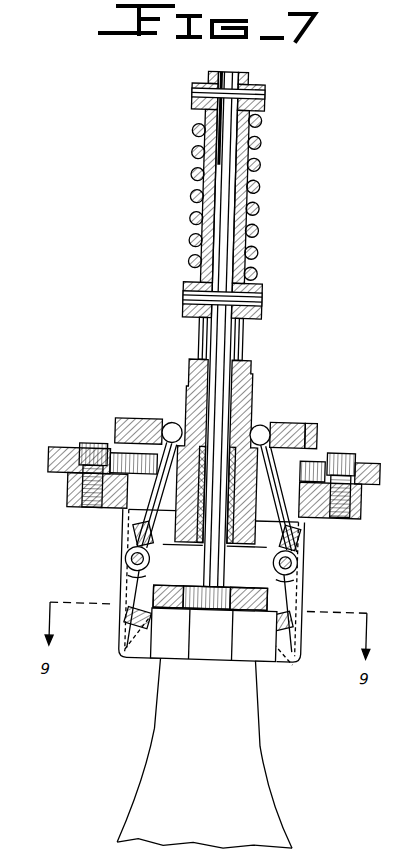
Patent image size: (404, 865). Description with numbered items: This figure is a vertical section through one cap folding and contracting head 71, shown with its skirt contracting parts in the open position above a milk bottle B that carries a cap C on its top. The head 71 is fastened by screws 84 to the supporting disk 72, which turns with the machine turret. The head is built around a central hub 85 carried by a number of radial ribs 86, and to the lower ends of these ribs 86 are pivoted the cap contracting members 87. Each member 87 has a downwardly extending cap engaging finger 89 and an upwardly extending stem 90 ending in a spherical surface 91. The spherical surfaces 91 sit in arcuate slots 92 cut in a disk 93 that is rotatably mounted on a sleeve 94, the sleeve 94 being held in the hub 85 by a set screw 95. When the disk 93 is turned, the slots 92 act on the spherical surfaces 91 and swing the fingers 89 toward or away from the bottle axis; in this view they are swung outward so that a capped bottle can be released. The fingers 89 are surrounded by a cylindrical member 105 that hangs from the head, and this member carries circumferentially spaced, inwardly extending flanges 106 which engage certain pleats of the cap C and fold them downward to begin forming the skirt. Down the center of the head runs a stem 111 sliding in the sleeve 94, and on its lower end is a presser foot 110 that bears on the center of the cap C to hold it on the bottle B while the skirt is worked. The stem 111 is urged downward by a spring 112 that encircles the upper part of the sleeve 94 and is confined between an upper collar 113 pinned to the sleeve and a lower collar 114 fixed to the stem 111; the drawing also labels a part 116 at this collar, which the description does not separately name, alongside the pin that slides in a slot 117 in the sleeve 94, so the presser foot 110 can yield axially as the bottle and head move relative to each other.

The cap folding and contracting head 71 is at (79, 497).
The disk 72 is at (59, 465).
The screw 84 is at (104, 447).
The hub 85 is at (203, 546).
The radial rib 86 is at (132, 517).
The cap contracting member 87 is at (139, 563).
The cap engaging finger 89 is at (142, 600).
The stem 90 is at (143, 520).
The spherical surface 91 is at (182, 424).
The arcuate slot 92 is at (300, 423).
The disk 93 is at (150, 422).
The sleeve 94 is at (199, 398).
The set screw 95 is at (330, 424).
The cylindrical member 105 is at (318, 590).
The inwardly extending flange 106 is at (153, 656).
The presser foot 110 is at (198, 590).
The stem 111 is at (222, 337).
The spring 112 is at (264, 232).
The collar 113 is at (268, 103).
The collar 114 is at (266, 312).
The pin 116 is at (266, 298).
The slot 117 is at (205, 280).
The cap C is at (232, 664).
The bottle B is at (272, 752).